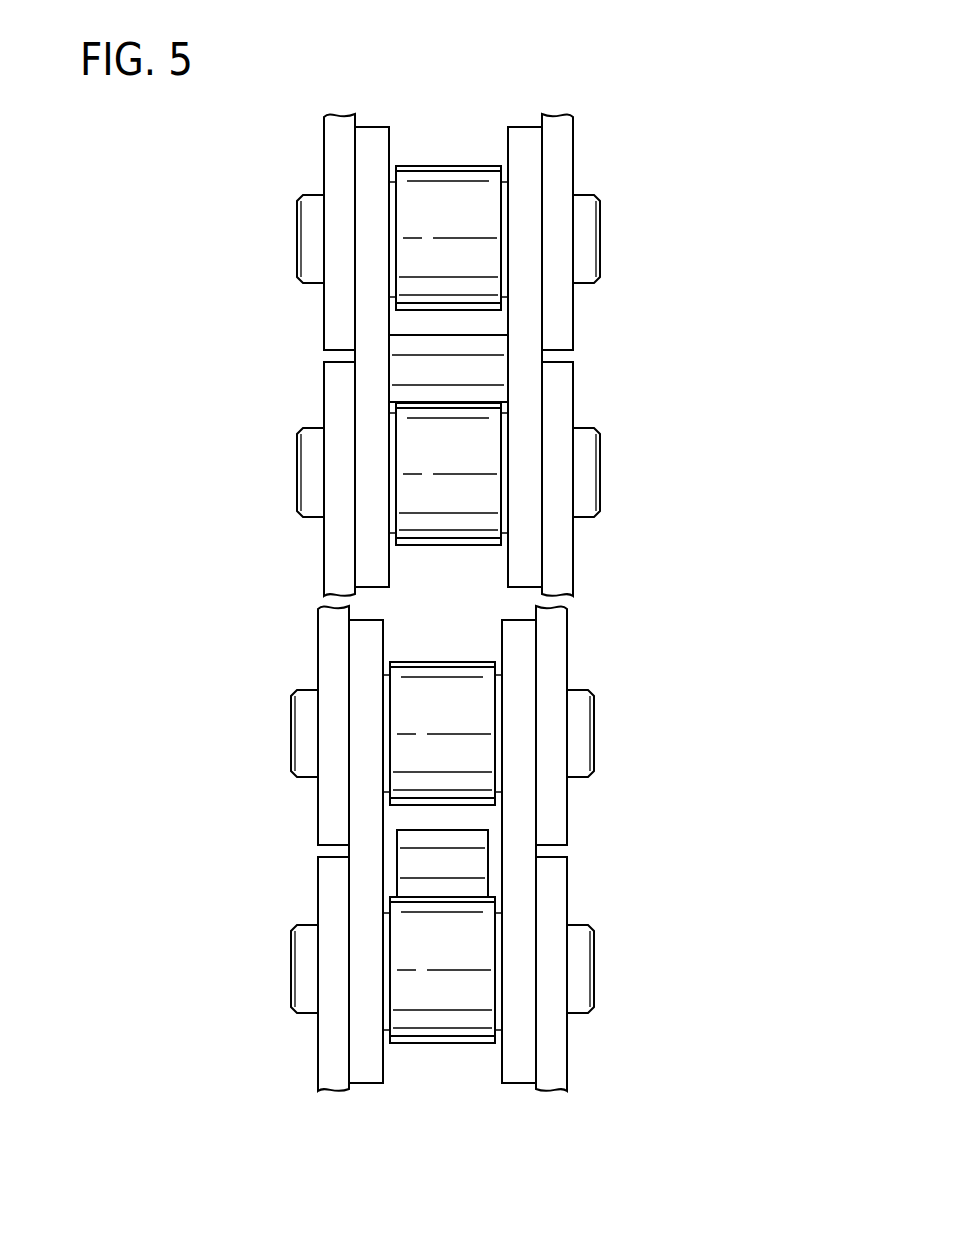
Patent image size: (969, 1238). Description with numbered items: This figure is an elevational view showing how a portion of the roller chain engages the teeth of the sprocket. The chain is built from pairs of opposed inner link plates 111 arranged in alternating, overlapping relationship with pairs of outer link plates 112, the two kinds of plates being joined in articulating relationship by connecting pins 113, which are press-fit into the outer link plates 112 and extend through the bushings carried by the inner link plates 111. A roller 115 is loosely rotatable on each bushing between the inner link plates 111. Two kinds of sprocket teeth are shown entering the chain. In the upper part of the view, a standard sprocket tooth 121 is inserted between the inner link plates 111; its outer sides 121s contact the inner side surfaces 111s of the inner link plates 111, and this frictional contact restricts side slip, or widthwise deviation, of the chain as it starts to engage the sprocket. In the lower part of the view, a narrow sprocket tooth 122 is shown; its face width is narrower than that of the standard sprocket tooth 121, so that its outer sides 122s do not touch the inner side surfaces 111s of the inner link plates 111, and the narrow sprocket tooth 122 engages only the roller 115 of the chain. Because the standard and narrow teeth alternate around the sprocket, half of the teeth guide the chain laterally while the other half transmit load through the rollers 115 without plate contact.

The inner link plate 111 is at (374, 133).
The inner side surface of inner link plate 111s is at (392, 147).
The outer link plate 112 is at (338, 148).
The connecting pin 113 is at (578, 230).
The roller 115 is at (448, 195).
The standard sprocket tooth 121 is at (478, 372).
The outer side of standard sprocket tooth 121s is at (383, 348).
The narrow sprocket tooth 122 is at (473, 865).
The outer side of narrow sprocket tooth 122s is at (393, 841).